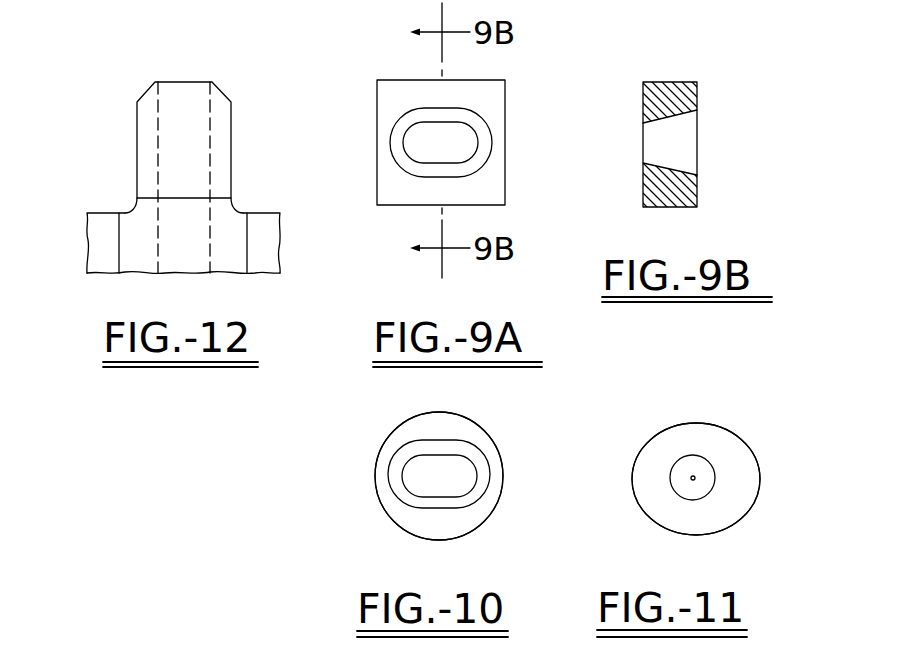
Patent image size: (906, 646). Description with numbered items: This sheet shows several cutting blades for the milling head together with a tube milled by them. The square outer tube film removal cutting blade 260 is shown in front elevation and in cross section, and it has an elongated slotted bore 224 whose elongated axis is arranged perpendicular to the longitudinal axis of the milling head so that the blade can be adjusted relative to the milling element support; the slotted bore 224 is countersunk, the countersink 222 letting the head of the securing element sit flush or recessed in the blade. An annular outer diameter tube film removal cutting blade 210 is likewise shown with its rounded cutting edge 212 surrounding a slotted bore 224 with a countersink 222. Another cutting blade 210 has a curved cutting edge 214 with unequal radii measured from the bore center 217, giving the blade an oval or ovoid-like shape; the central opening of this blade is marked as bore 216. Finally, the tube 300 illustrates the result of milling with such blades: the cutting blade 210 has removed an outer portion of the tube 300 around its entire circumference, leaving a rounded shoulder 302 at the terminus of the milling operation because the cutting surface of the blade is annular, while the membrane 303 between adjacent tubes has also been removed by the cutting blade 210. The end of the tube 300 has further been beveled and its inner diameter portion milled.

In FIG. 10, the outer diameter tube film removal cutting blade 210 is at (379, 429).
In FIG. 11, the outer diameter tube film removal cutting blade 210 is at (713, 417).
In FIG. 10, the rounded cutting edge 212 is at (375, 473).
In FIG. 11, the curved cutting edge 214 is at (758, 468).
In FIG. 11, the central bore 216 is at (686, 457).
In FIG. 11, the bore center 217 is at (696, 481).
In FIG. 9A, the countersink 222 is at (476, 123).
In FIG. 9B, the countersink 222 is at (698, 127).
In FIG. 10, the countersink 222 is at (462, 503).
In FIG. 9A, the slotted bore 224 is at (460, 149).
In FIG. 9B, the slotted bore 224 is at (678, 147).
In FIG. 10, the slotted bore 224 is at (419, 487).
In FIG. 9A, the square outer tube film removal cutting blade 260 is at (509, 77).
In FIG. 9B, the square outer tube film removal cutting blade 260 is at (701, 79).
In FIG. 12, the tube 300 is at (132, 119).
In FIG. 12, the rounded shoulder 302 is at (130, 205).
In FIG. 12, the membrane 303 is at (268, 220).